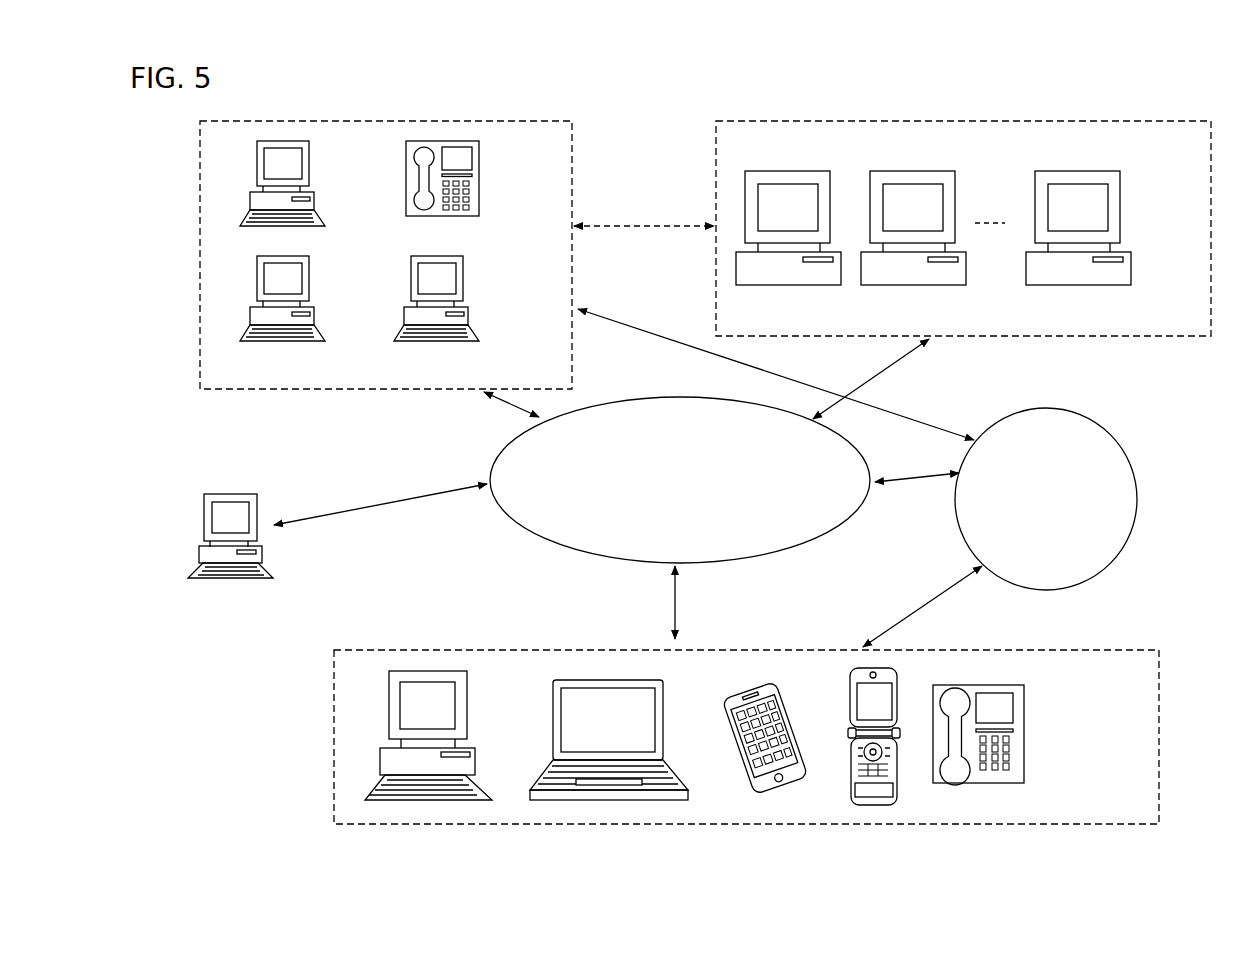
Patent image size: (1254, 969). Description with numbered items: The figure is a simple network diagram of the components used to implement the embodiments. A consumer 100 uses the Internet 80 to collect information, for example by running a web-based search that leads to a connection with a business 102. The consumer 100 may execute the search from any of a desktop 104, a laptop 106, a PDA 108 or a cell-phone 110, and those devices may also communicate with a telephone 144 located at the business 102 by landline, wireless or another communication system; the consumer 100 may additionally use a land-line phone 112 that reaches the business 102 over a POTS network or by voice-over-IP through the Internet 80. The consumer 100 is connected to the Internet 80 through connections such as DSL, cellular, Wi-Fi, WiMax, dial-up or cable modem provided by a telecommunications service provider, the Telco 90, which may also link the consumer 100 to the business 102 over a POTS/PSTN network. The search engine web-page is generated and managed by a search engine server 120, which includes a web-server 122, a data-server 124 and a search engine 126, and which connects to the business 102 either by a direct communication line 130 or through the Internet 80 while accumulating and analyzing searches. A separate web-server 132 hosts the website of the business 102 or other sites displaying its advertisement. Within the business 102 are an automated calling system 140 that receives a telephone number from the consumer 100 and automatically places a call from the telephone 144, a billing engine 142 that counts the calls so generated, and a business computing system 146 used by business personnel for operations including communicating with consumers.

The Internet 80 is at (669, 497).
The telecommunications service provider (Telco) 90 is at (1032, 518).
The consumer 100 is at (1121, 781).
The business 102 is at (555, 370).
The desktop 104 is at (429, 807).
The laptop 106 is at (656, 799).
The PDA 108 is at (799, 797).
The cell-phone 110 is at (903, 797).
The land-line phone 112 is at (997, 797).
The search engine server 120 is at (1186, 319).
The web-server 122 is at (806, 290).
The data-server 124 is at (952, 290).
The search engine 126 is at (1097, 291).
The direct communication line 130 is at (644, 247).
The web-server 132 is at (240, 581).
The automated calling system 140 is at (238, 175).
The billing engine 142 is at (414, 344).
The telephone 144 is at (479, 172).
The business computing system 146 is at (273, 344).